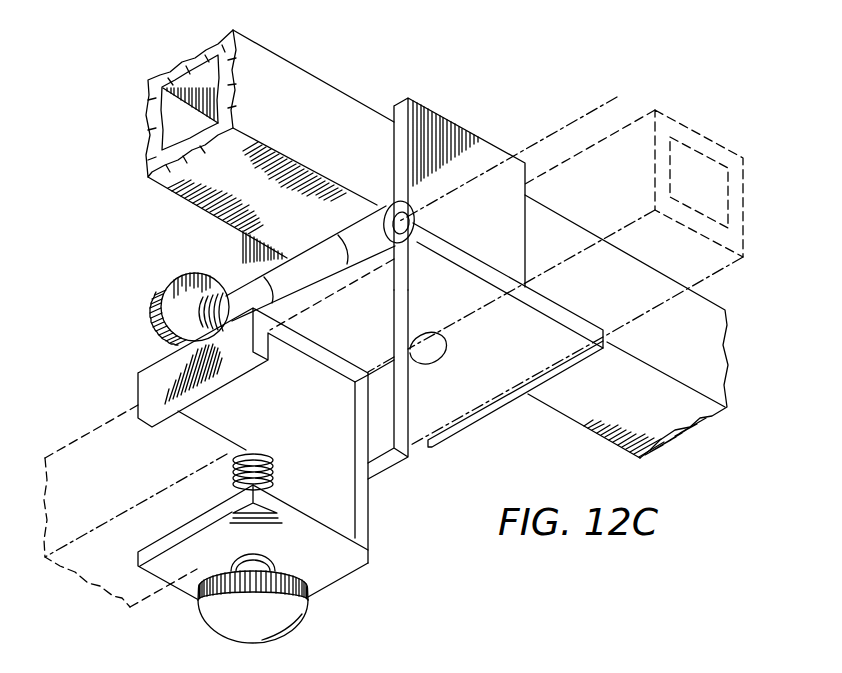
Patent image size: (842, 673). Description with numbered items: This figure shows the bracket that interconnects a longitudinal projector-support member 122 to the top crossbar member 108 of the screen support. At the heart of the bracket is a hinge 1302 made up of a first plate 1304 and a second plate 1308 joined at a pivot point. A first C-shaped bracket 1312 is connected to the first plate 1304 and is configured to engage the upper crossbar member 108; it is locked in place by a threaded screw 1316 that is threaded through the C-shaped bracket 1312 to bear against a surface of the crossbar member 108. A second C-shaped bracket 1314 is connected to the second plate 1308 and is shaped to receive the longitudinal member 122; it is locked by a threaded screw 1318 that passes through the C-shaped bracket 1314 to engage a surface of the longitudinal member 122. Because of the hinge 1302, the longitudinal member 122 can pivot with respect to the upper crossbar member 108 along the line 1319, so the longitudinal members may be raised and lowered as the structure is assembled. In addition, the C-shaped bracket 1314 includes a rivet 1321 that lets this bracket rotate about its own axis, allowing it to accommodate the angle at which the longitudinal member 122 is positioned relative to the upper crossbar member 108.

The top crossbar member 108 is at (75, 443).
The longitudinal member 122 is at (730, 348).
The hinge 1302 is at (574, 380).
The first plate 1304 is at (410, 395).
The second plate 1308 is at (482, 418).
The first C-shaped bracket 1312 is at (368, 535).
The second C-shaped bracket 1314 is at (517, 157).
The threaded screw 1316 is at (302, 627).
The threaded screw 1318 is at (163, 291).
The line 1319 is at (603, 105).
The rivet 1321 is at (447, 347).